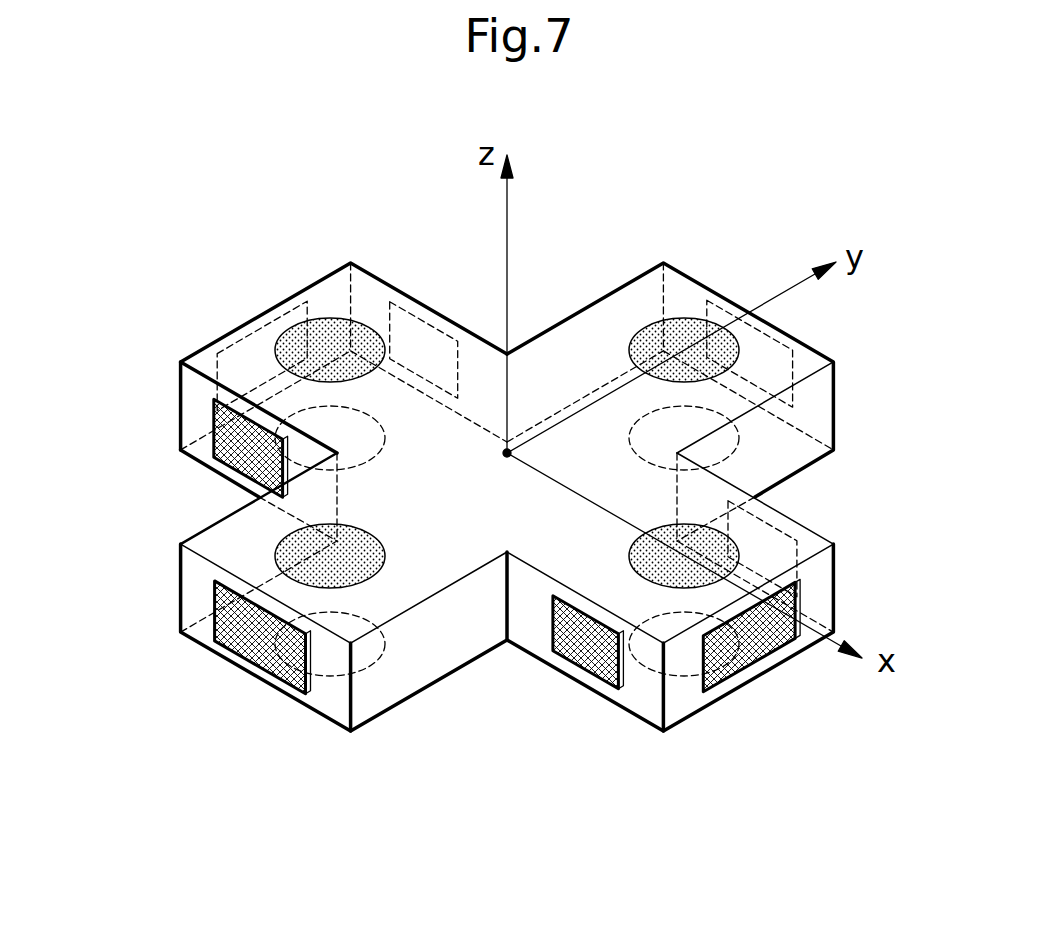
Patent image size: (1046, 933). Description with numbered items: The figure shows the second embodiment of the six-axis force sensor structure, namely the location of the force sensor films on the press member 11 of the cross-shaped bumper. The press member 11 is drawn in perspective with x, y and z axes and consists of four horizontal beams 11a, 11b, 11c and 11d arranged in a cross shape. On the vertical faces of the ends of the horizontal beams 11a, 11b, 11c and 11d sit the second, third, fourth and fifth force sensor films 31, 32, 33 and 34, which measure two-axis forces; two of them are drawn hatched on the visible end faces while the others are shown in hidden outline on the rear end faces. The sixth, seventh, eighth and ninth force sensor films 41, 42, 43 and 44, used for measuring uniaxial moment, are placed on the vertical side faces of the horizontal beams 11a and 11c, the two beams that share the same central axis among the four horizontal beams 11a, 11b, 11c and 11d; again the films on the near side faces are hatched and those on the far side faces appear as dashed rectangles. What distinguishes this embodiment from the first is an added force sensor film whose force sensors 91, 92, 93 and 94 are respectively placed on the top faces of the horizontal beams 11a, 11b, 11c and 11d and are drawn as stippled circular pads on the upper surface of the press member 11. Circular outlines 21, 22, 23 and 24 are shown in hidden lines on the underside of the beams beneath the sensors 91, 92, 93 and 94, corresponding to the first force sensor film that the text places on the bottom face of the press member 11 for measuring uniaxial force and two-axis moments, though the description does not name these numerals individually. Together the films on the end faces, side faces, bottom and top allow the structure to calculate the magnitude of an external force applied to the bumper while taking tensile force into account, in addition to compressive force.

The press member 11 is at (771, 198).
The horizontal beam 11a is at (818, 572).
The horizontal beam 11b is at (677, 292).
The horizontal beam 11c is at (325, 297).
The horizontal beam 11d is at (333, 702).
The lower electrode of first arm 21 is at (680, 677).
The lower electrode of second arm 22 is at (712, 410).
The lower electrode of third arm 23 is at (312, 428).
The lower electrode of fourth arm 24 is at (372, 655).
The second force sensor film 31 is at (787, 642).
The third force sensor film 32 is at (770, 357).
The fourth force sensor film 33 is at (240, 367).
The fifth force sensor film 34 is at (215, 640).
The sixth force sensor film 41 is at (762, 525).
The seventh force sensor film 42 is at (220, 470).
The eighth force sensor film 43 is at (572, 655).
The ninth force sensor film 44 is at (417, 340).
The force sensor 91 is at (702, 518).
The force sensor 92 is at (638, 333).
The force sensor 93 is at (372, 350).
The force sensor 94 is at (277, 545).